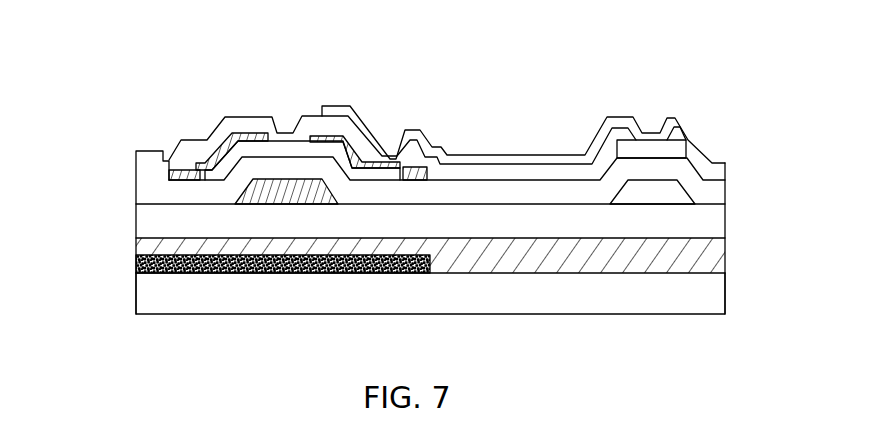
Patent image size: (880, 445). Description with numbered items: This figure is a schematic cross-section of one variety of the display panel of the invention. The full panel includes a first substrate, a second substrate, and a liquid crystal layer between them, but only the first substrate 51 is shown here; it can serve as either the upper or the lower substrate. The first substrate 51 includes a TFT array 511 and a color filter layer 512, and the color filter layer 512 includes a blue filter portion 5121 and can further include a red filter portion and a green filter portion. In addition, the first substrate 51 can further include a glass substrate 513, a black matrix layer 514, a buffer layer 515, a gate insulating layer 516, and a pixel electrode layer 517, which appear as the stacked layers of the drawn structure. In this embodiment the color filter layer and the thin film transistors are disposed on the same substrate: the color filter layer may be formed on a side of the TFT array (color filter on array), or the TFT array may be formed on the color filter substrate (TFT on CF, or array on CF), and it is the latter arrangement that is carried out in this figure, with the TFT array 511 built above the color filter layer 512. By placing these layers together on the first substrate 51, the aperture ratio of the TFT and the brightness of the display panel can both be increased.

The first substrate 51 is at (134, 75).
The TFT array 511 is at (156, 173).
The color filter layer 512 is at (140, 245).
The blue filter portion 5121 is at (718, 250).
The glass substrate 513 is at (140, 293).
The black matrix layer 514 is at (140, 263).
The buffer layer 515 is at (140, 220).
The gate insulating layer 516 is at (140, 190).
The pixel electrode layer 517 is at (467, 157).